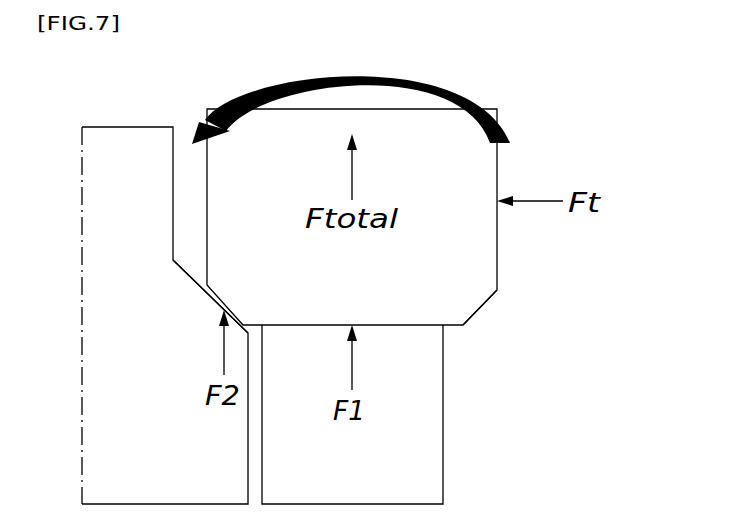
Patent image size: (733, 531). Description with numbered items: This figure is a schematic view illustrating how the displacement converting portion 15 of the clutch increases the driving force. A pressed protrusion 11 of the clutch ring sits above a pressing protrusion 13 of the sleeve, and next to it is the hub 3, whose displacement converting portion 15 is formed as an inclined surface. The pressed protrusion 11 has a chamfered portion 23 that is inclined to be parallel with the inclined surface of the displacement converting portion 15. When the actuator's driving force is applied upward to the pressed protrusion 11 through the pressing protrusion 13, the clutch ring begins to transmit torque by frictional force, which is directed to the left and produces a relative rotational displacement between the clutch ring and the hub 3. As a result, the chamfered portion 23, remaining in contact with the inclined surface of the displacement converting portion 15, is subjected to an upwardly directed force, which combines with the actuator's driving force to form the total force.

The hub 3 is at (141, 190).
The pressed protrusion 11 is at (478, 257).
The pressing protrusion 13 is at (424, 437).
The displacement converting portion 15 is at (186, 307).
The chamfered portion 23 is at (481, 311).